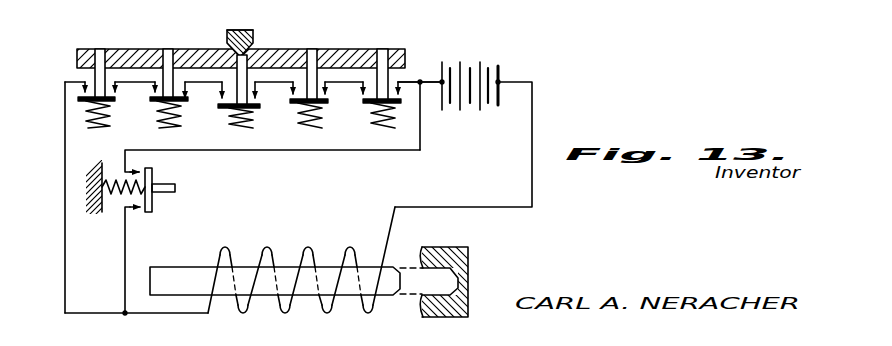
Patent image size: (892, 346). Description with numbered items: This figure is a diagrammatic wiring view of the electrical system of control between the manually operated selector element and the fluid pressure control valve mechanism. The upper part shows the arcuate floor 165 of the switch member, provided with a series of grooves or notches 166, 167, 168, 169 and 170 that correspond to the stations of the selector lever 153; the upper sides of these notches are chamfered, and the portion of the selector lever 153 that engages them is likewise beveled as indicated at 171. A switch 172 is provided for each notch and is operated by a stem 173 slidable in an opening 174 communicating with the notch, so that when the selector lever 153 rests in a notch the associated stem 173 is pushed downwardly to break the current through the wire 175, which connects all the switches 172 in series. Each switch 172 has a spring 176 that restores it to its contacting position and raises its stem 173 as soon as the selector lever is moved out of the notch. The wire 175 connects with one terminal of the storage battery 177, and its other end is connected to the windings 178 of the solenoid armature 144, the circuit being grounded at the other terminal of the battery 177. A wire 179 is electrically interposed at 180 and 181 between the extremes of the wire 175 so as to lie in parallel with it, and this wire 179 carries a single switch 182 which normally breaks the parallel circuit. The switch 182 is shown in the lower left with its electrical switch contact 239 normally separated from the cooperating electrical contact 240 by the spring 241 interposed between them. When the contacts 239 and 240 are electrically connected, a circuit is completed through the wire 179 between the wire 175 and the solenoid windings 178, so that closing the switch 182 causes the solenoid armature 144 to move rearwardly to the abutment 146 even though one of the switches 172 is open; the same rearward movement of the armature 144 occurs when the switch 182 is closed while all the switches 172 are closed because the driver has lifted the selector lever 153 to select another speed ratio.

The solenoid armature 144 is at (262, 292).
The abutment 146 is at (471, 252).
The selector lever 153 is at (240, 30).
The arcuate floor 165 is at (400, 58).
The notch 166 is at (229, 44).
The notch 167 is at (312, 49).
The notch 168 is at (382, 49).
The notch 169 is at (167, 49).
The notch 170 is at (98, 49).
The beveled portion 171 is at (256, 51).
The switch 172 is at (371, 112).
The stem 173 is at (407, 72).
The opening 174 is at (358, 60).
The wire 175 is at (66, 140).
The spring 176 is at (160, 111).
The storage battery 177 is at (449, 60).
The solenoid windings 178 is at (268, 250).
The wire 179 is at (268, 150).
The connection point 180 is at (417, 86).
The connection point 181 is at (123, 314).
The switch 182 is at (176, 188).
The electrical switch contact 239 is at (149, 170).
The electrical contact 240 is at (135, 210).
The spring 241 is at (108, 203).